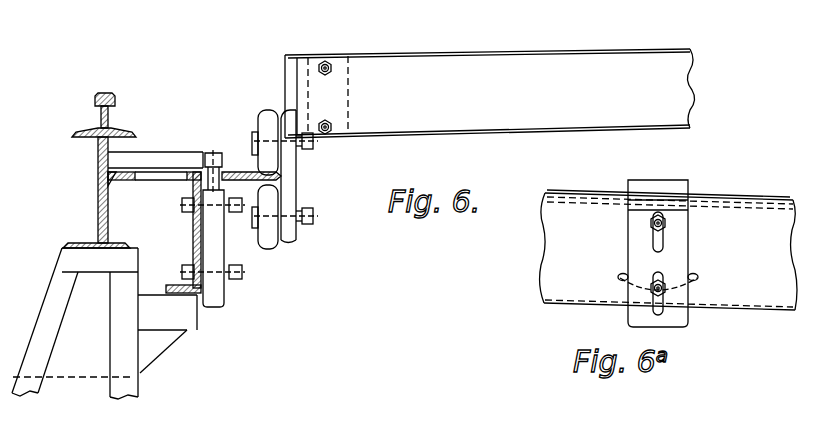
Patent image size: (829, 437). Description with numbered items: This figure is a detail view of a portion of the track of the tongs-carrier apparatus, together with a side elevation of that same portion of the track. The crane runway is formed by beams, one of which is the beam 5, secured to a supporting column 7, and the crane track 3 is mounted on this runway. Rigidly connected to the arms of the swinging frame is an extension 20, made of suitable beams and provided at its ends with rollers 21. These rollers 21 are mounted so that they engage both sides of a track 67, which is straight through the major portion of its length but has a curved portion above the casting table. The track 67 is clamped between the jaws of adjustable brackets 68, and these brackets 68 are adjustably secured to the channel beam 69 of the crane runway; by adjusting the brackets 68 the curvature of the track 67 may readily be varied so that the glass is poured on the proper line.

In FIG. 6, the track 3 is at (100, 108).
In FIG. 6, the beam 5 is at (97, 188).
In FIG. 6, the supporting column 7 is at (104, 321).
In FIG. 6, the extension 20 is at (490, 93).
In FIG. 6, the rollers 21 is at (268, 124).
In FIG. 6, the track 67 is at (252, 176).
In FIG. 6A, the track 67 is at (724, 198).
In FIG. 6, the adjustable brackets 68 is at (216, 251).
In FIG. 6A, the adjustable brackets 68 is at (678, 253).
In FIG. 6, the channel beam 69 is at (194, 234).
In FIG. 6A, the channel beam 69 is at (620, 254).